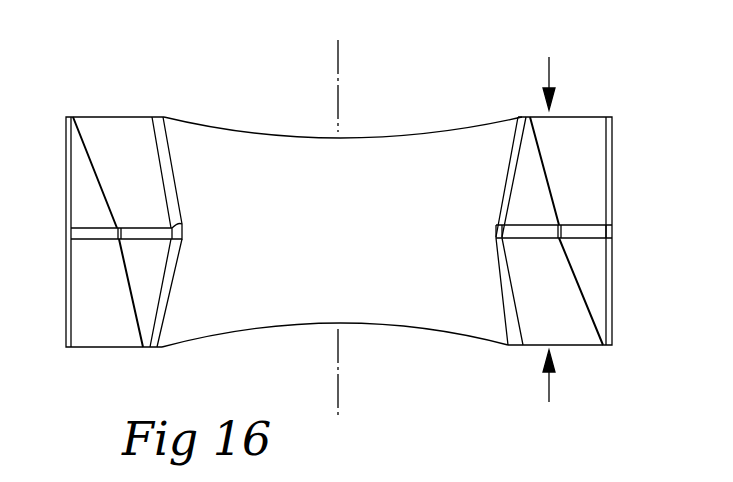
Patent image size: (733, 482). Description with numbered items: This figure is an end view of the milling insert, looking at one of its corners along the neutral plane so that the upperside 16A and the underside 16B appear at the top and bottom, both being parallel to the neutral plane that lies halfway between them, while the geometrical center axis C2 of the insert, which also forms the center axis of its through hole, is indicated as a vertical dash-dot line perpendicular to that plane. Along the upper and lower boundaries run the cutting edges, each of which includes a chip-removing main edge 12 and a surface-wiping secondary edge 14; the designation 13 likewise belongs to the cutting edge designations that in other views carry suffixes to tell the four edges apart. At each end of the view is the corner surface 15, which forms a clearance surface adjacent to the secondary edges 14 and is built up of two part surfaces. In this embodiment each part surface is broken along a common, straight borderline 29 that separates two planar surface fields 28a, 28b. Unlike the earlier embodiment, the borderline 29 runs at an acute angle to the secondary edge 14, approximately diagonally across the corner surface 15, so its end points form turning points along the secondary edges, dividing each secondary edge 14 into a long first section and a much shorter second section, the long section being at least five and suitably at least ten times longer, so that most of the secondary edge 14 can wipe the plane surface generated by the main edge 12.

The main edge 12 is at (250, 132).
The cutting edge portion 13 is at (342, 207).
The secondary edge 14 is at (100, 117).
The corner surface 15 is at (103, 227).
The surface field 28a is at (600, 165).
The surface field 28b is at (527, 166).
The borderline 29 is at (125, 264).
The geometrical center axis C2 is at (340, 70).
The upperside 16A is at (545, 71).
The underside 16B is at (545, 388).